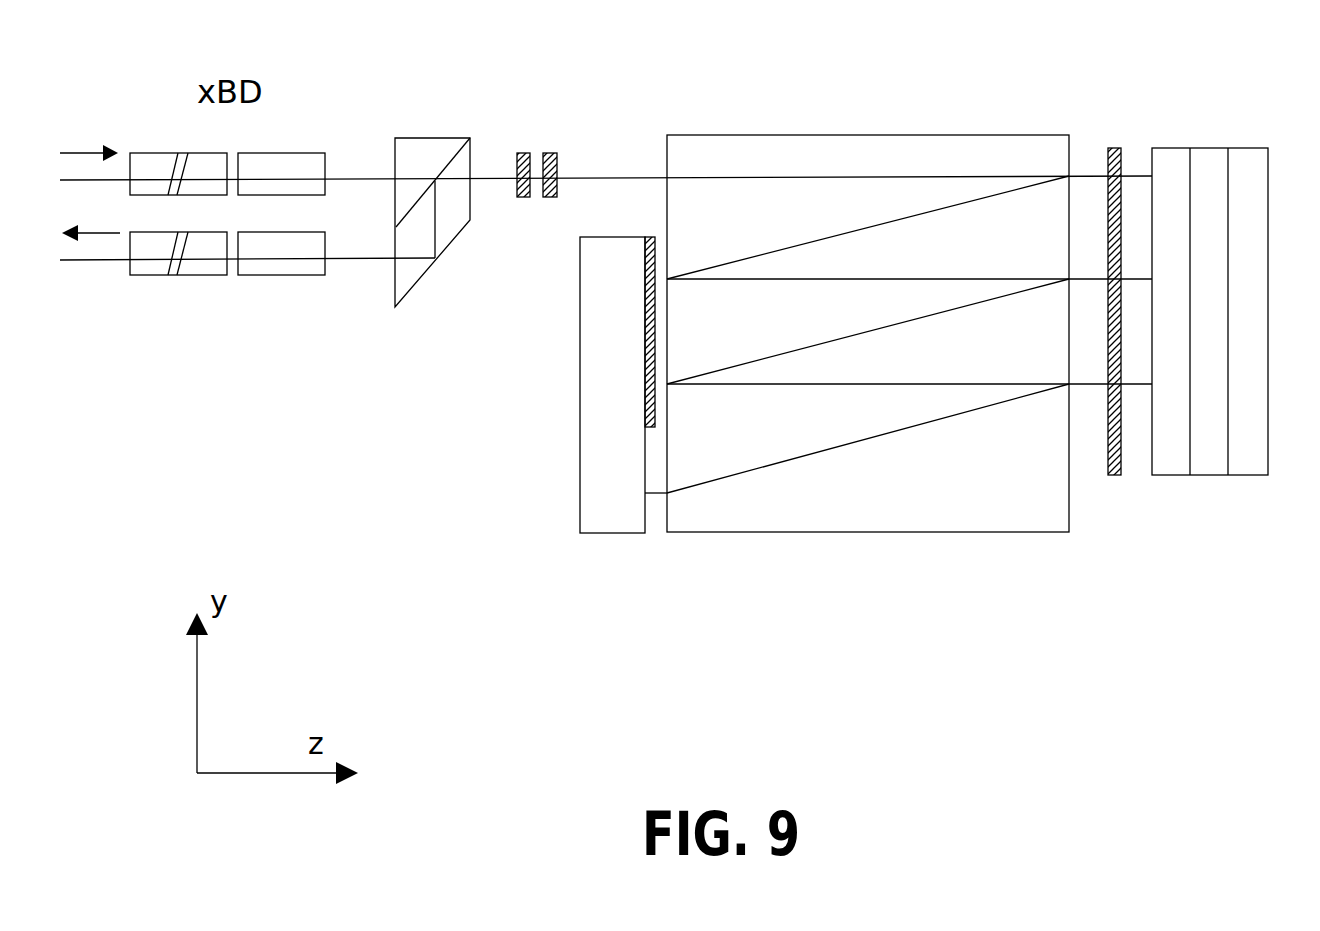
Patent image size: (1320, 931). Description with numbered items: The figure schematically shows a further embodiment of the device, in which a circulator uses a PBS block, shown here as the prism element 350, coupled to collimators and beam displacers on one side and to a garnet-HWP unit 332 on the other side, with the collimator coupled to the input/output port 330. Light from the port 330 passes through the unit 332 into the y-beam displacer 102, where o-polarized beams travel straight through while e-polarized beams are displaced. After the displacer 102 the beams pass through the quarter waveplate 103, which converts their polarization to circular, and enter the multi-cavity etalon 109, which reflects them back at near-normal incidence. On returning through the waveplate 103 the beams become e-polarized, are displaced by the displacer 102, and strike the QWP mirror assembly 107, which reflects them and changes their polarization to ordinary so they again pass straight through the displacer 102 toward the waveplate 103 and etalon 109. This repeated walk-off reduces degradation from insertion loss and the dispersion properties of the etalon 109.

The input/output port 330 is at (650, 177).
The beam displacer prism 350 is at (408, 145).
The garnet-HWP unit 332 is at (532, 207).
The y-beam displacer 102 is at (917, 132).
The QWP mirror assembly 107 is at (603, 533).
The quarter waveplate 103 is at (1117, 477).
The multi-cavity etalon 109 is at (1212, 475).